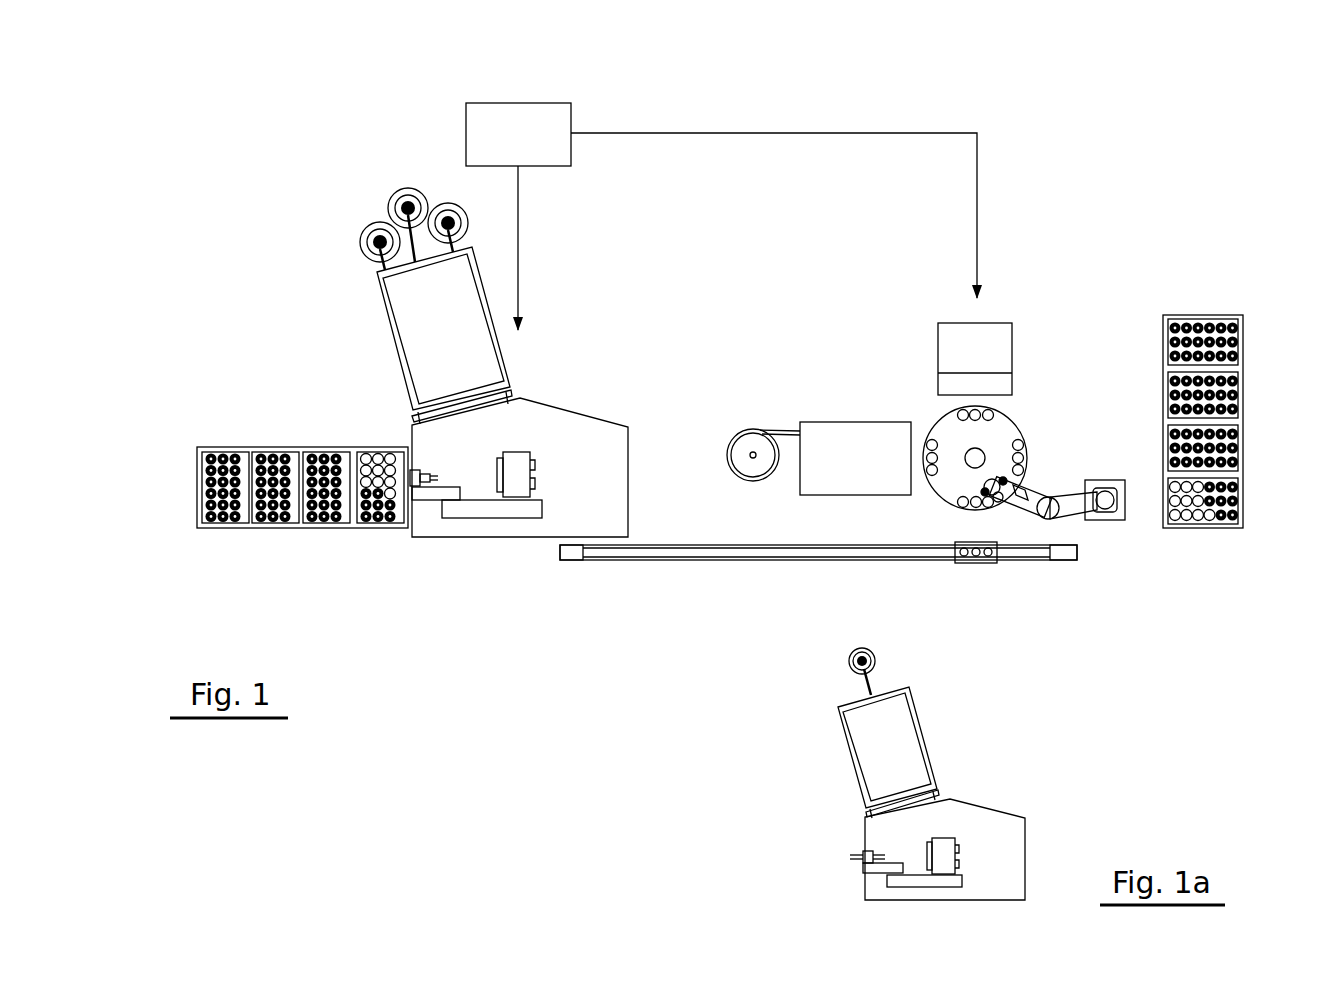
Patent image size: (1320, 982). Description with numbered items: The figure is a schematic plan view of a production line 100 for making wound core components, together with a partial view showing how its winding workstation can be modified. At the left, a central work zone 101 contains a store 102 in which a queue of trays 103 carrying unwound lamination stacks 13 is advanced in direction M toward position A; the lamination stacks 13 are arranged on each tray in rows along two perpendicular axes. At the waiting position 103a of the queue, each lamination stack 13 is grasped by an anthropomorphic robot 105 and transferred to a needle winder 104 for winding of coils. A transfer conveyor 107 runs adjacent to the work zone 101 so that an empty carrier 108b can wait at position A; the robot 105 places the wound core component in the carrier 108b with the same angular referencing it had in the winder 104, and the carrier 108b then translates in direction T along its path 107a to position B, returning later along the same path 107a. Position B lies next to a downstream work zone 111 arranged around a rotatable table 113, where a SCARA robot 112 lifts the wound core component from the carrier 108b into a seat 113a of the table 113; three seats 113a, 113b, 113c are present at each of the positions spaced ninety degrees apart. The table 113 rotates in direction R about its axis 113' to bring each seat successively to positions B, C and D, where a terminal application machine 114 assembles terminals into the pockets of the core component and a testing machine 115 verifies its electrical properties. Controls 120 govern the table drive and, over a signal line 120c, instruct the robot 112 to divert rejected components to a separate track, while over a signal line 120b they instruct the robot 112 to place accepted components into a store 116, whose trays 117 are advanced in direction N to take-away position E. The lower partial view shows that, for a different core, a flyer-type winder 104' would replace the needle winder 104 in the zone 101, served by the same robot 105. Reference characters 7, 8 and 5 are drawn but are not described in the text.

In FIG. 1, the production line 100 is at (226, 200).
In FIG. 1, the work zone 101 is at (340, 338).
In FIG. 1A, the work zone 101 is at (818, 783).
In FIG. 1, the store 102 is at (220, 420).
In FIG. 1, the tray 103 is at (303, 490).
In FIG. 1, the waiting position 103a is at (380, 447).
In FIG. 1, the lamination stack 13 is at (278, 448).
In FIG. 1, the needle winder 104 is at (479, 328).
In FIG. 1A, the winder 104' is at (927, 747).
In FIG. 1, the anthropomorphic robot 105 is at (500, 500).
In FIG. 1A, the anthropomorphic robot 105 is at (870, 867).
In FIG. 1, the controls 120 is at (485, 142).
In FIG. 1, the signal line 120b is at (518, 232).
In FIG. 1, the signal line 120c is at (977, 180).
In FIG. 1, the inspection station 7 is at (598, 378).
In FIG. 1, the transfer station 8 is at (1065, 433).
In FIG. 1, the work zone 111 is at (1020, 270).
In FIG. 1, the table 113 is at (959, 466).
In FIG. 1, the axis 113' is at (916, 429).
In FIG. 1, the seat 113a is at (960, 507).
In FIG. 1, the seat 113b is at (986, 520).
In FIG. 1, the seat 113c is at (1000, 500).
In FIG. 1, the terminal application machine 114 is at (823, 430).
In FIG. 1, the testing machine 115 is at (992, 350).
In FIG. 1, the robot 112 is at (1062, 493).
In FIG. 1, the store 116 is at (1225, 394).
In FIG. 1, the tray 117 is at (1178, 318).
In FIG. 1, the transfer conveyor 107 is at (818, 576).
In FIG. 1, the path 107a is at (663, 546).
In FIG. 1, the carrier 108b is at (978, 563).
In FIG. 1, the conveyor section 5 is at (940, 570).